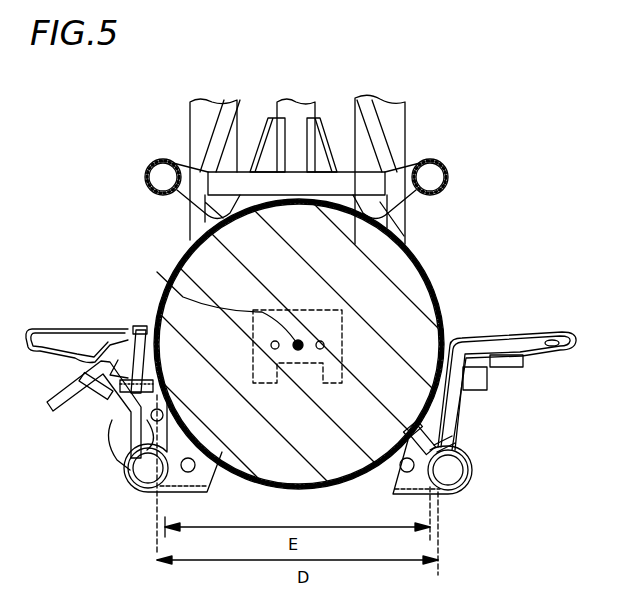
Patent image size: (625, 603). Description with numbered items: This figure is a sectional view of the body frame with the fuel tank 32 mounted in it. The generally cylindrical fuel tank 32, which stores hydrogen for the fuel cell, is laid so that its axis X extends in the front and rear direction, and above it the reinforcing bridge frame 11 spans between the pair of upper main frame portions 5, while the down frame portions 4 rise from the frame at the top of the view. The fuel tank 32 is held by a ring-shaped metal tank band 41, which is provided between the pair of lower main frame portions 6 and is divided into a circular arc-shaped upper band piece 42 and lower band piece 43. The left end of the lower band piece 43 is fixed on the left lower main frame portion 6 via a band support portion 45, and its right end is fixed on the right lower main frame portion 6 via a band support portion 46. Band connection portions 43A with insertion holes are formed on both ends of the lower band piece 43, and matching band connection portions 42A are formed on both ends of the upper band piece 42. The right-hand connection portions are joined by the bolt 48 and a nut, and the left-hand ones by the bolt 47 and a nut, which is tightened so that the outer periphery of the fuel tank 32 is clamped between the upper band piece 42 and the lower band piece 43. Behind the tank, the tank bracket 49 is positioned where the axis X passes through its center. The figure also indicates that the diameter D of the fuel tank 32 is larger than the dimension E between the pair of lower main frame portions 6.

The down frame portions 4 is at (190, 124).
The upper main frame portions 5 is at (150, 167).
The reinforcing bridge frame 11 is at (318, 184).
The tank band 41 is at (411, 245).
The fuel tank 32 is at (403, 284).
The tank bracket 49 is at (343, 315).
The upper band piece 42 is at (193, 248).
The band connection portions 42A is at (127, 332).
The bolt 47 is at (137, 328).
The bolt 48 is at (440, 426).
The lower band piece 43 is at (285, 492).
The band connection portions 43A is at (93, 397).
The band support portion 45 is at (147, 430).
The band support portion 46 is at (395, 470).
The lower main frame portions 6 is at (124, 485).